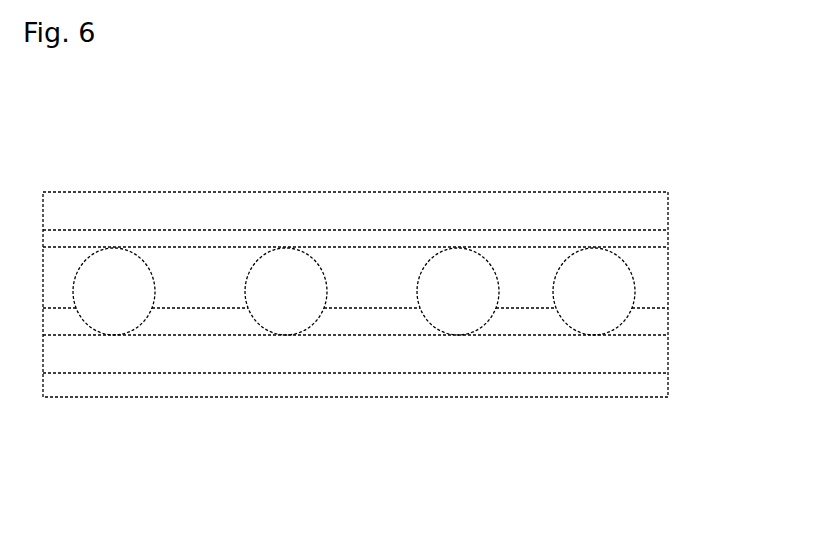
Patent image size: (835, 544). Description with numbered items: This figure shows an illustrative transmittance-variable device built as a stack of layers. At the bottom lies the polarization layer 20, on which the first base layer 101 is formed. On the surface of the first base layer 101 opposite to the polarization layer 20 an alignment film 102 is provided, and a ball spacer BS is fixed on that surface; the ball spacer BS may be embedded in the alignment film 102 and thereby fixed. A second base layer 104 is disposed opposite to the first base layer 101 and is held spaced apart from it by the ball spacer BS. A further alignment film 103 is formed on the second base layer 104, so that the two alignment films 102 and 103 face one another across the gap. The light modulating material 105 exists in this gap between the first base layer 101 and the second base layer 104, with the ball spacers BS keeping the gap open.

The polarization layer 20 is at (233, 401).
The first base layer 101 is at (628, 367).
The alignment film 102 is at (663, 313).
The alignment film 103 is at (646, 236).
The second base layer 104 is at (618, 196).
The light modulating material 105 is at (372, 261).
The ball spacer BS is at (281, 279).